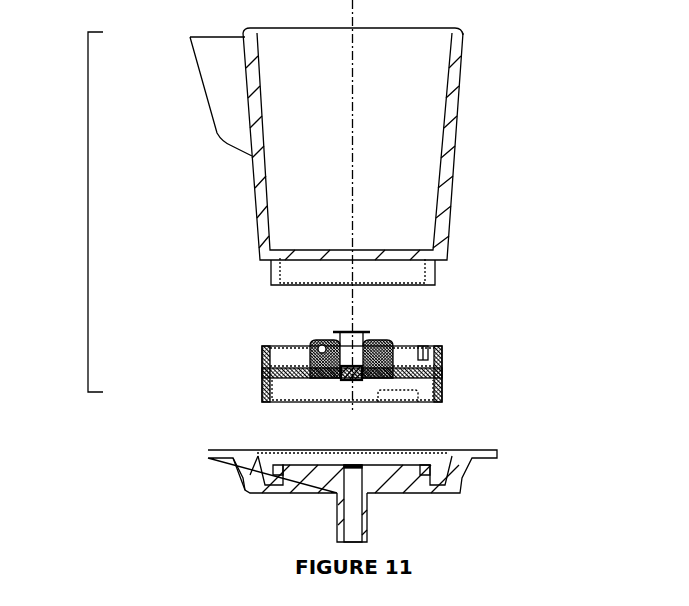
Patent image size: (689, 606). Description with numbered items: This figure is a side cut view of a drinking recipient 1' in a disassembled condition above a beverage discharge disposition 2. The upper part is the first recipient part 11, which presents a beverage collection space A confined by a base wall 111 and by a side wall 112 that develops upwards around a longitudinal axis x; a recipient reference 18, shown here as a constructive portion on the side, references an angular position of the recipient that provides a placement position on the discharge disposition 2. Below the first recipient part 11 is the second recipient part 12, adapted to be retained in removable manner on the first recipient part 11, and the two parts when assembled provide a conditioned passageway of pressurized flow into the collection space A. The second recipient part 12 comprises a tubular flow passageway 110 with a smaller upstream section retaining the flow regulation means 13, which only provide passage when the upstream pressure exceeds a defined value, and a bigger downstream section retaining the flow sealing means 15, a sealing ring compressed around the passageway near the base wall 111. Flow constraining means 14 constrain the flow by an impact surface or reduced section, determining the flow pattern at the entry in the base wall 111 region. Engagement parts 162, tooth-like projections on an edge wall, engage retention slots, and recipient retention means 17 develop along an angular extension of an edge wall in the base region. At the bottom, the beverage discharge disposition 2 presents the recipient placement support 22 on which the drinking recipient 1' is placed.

The drinking recipient 1' is at (66, 212).
The longitudinal axis x is at (337, 205).
The recipient reference 18 is at (201, 96).
The first recipient part 11 is at (321, 144).
The base wall 111 is at (354, 141).
The side wall 112 is at (474, 152).
The beverage collection space A is at (399, 85).
The flow passageway 110 is at (353, 277).
The second recipient part 12 is at (320, 374).
The flow sealing means 15 is at (348, 342).
The flow constraining means 14 is at (364, 339).
The engagement parts 162 is at (450, 337).
The flow regulation means 13 is at (351, 382).
The recipient retention means 17 is at (386, 404).
The beverage discharge disposition 2 is at (331, 467).
The recipient placement support 22 is at (437, 503).